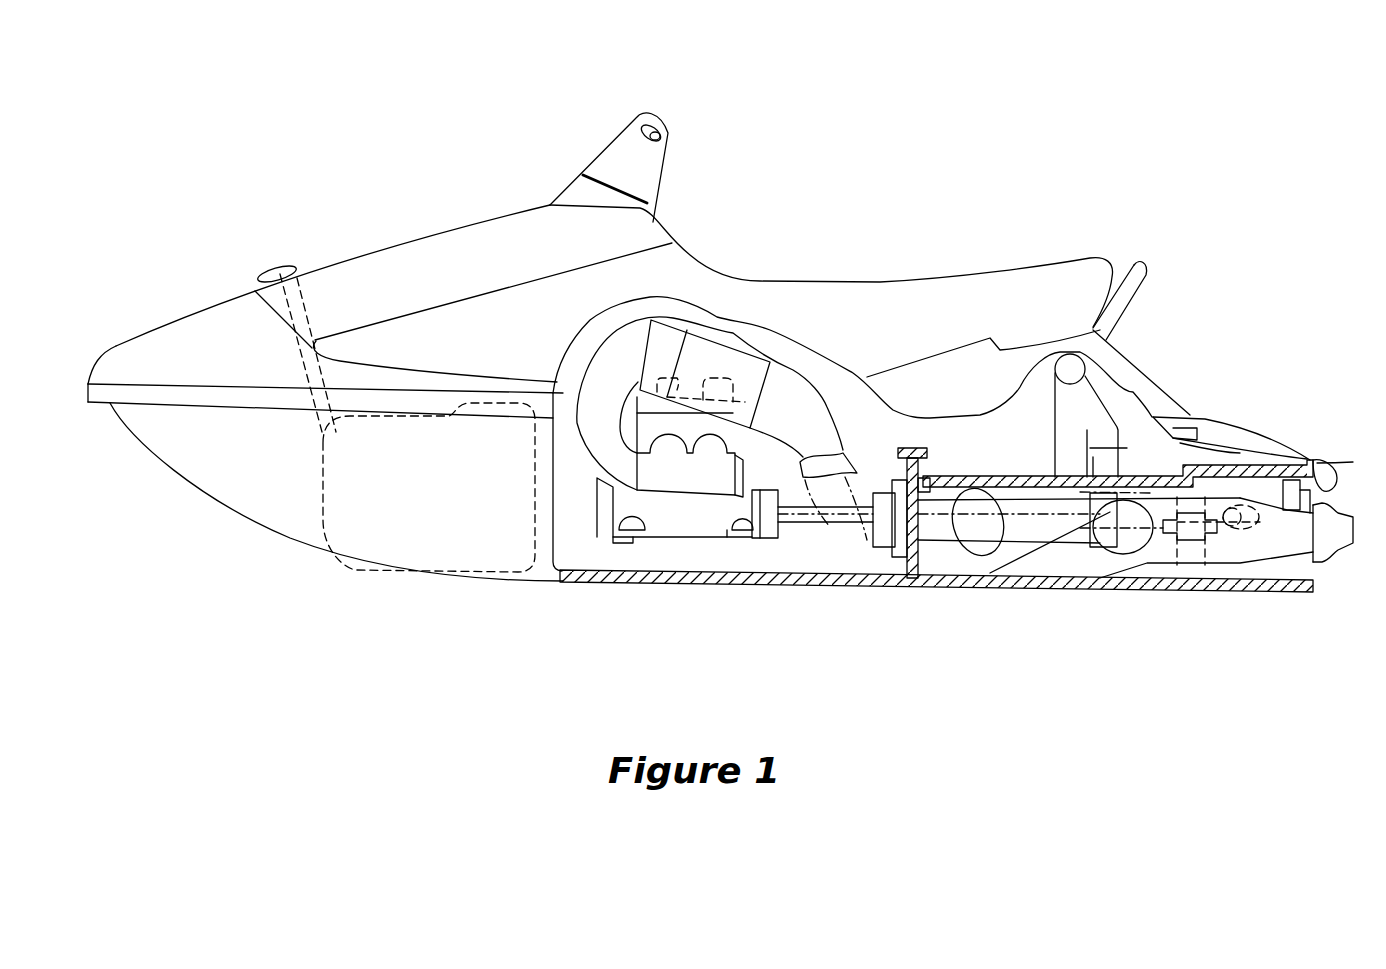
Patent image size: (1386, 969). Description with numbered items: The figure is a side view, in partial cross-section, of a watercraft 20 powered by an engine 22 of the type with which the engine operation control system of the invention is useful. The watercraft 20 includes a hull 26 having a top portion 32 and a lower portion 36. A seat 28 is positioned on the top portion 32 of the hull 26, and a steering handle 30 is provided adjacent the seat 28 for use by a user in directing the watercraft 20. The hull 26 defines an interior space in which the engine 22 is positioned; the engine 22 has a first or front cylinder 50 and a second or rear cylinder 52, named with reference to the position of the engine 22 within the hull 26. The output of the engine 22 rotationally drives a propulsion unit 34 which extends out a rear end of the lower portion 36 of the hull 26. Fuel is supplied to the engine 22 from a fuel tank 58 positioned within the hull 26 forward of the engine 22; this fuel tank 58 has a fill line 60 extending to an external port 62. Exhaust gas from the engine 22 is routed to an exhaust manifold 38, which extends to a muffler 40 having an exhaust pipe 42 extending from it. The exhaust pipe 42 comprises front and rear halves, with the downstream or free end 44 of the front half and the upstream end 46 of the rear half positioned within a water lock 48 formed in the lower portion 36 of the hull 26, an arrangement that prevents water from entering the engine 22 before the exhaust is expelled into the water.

The watercraft 20 is at (793, 147).
The engine 22 is at (634, 555).
The hull 26 is at (430, 253).
The seat 28 is at (945, 297).
The steering handle 30 is at (667, 121).
The top portion 32 is at (197, 333).
The propulsion unit 34 is at (1230, 568).
The lower portion 36 is at (247, 500).
The exhaust manifold 38 is at (684, 502).
The muffler 40 is at (703, 348).
The exhaust pipe 42 is at (869, 583).
The free end 44 is at (980, 553).
The upstream end 46 is at (1097, 553).
The water lock 48 is at (1015, 485).
The front cylinder 50 is at (630, 402).
The rear cylinder 52 is at (748, 392).
The fuel tank 58 is at (436, 550).
The fill line 60 is at (300, 310).
The external port 62 is at (281, 266).